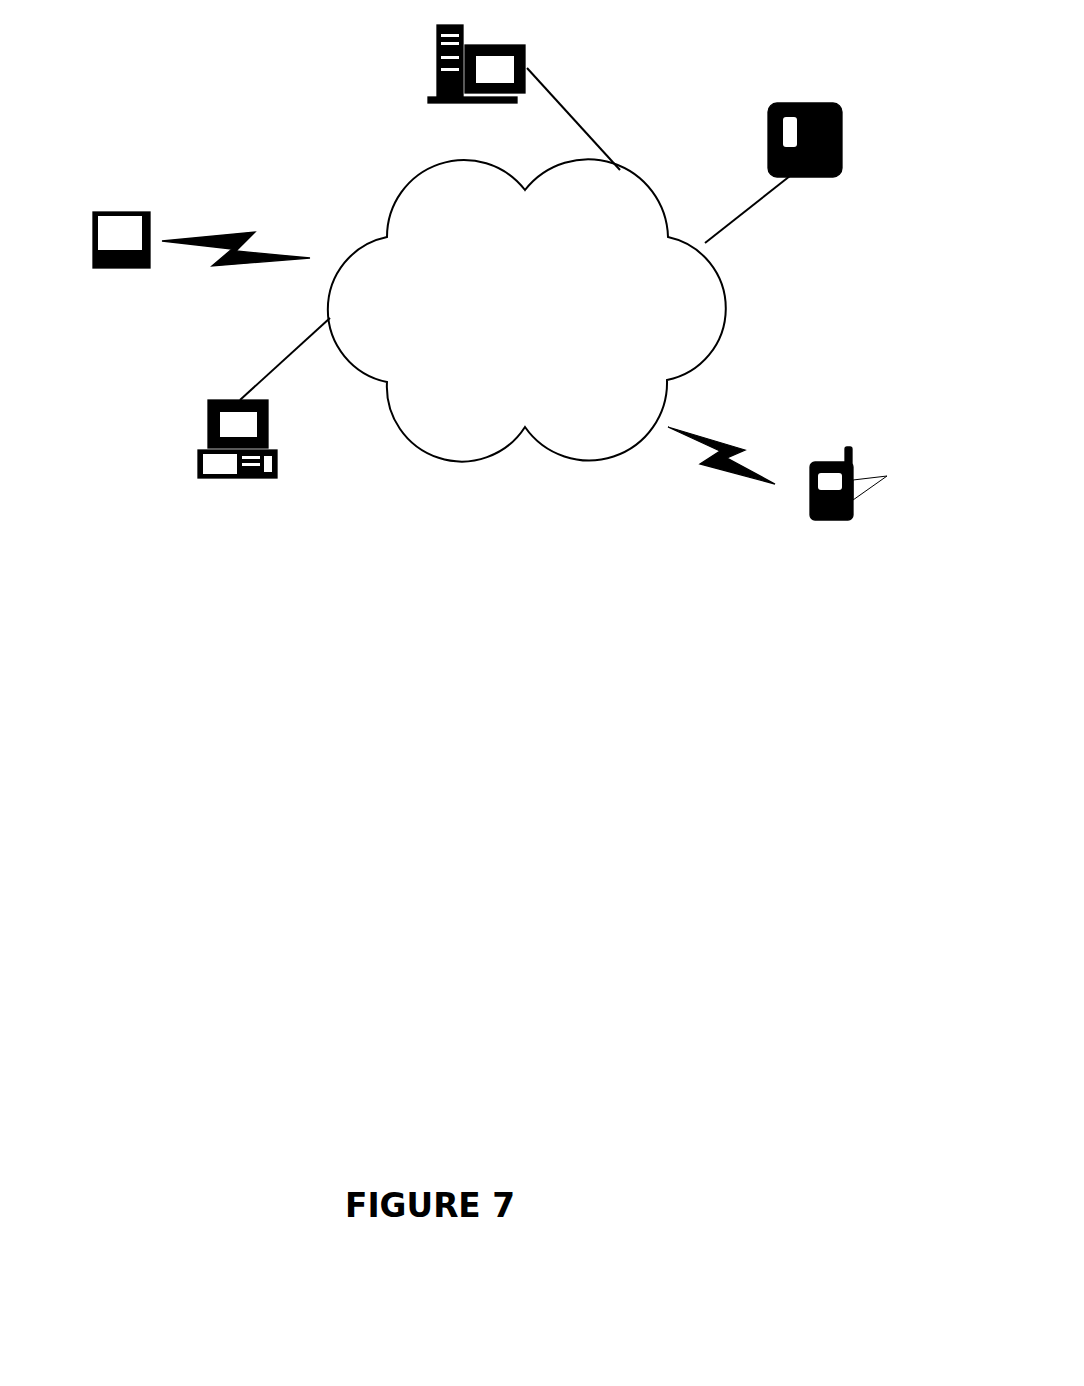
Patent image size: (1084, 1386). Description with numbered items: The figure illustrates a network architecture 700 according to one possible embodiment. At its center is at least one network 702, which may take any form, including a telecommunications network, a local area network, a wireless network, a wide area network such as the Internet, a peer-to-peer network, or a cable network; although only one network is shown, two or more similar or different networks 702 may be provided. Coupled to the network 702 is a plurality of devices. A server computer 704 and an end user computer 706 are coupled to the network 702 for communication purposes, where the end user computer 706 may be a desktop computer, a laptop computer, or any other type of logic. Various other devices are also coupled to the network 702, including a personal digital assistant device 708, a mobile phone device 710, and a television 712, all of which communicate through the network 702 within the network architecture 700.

The network architecture 700 is at (433, 764).
The network 702 is at (585, 460).
The server computer 704 is at (437, 62).
The end user computer 706 is at (203, 455).
The personal digital assistant (PDA) device 708 is at (123, 212).
The mobile phone device 710 is at (807, 462).
The television 712 is at (776, 101).